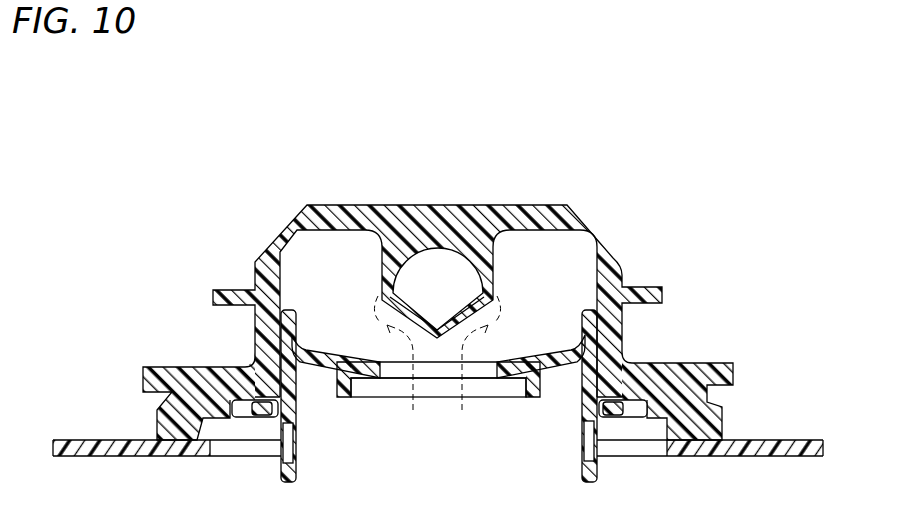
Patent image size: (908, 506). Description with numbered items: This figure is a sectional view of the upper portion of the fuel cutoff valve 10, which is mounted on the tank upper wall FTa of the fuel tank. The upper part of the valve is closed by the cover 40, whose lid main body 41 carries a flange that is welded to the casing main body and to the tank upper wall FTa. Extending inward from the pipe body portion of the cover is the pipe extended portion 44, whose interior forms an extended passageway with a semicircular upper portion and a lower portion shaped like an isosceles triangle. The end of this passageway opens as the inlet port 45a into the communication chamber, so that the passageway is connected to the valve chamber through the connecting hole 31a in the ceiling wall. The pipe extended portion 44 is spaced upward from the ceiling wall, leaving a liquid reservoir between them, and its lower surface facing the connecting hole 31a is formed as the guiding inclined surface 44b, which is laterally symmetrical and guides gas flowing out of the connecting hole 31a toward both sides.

The fuel cutoff valve 10 is at (496, 259).
The cover 40 is at (459, 260).
The lid main body 41 is at (655, 362).
The pipe extended portion 44 is at (380, 231).
The guiding inclined surface 44b is at (383, 318).
The inlet port 45a is at (469, 292).
The connecting hole 31a is at (487, 370).
The tank upper wall FTa is at (778, 440).